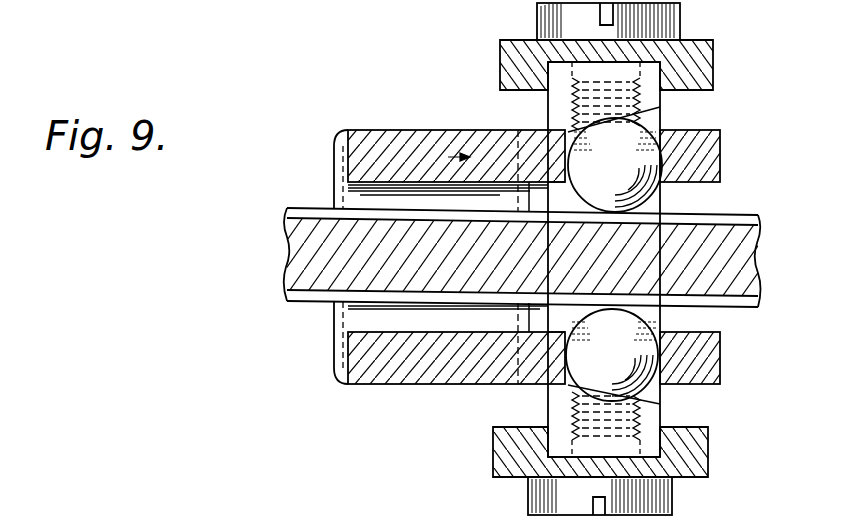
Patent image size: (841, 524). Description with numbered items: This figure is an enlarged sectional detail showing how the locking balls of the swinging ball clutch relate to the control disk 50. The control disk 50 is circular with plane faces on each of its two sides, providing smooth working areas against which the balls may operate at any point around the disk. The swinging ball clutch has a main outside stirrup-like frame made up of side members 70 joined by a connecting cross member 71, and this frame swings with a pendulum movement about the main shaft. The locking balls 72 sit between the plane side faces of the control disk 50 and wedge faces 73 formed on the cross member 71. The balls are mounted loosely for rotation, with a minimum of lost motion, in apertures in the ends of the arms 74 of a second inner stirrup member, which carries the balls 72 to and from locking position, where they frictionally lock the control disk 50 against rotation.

The control disk 50 is at (283, 297).
The side members 70 is at (714, 66).
The cross member 71 is at (553, 412).
The locking balls 72 is at (655, 200).
The wedge faces 73 is at (655, 117).
The arms 74 is at (369, 130).